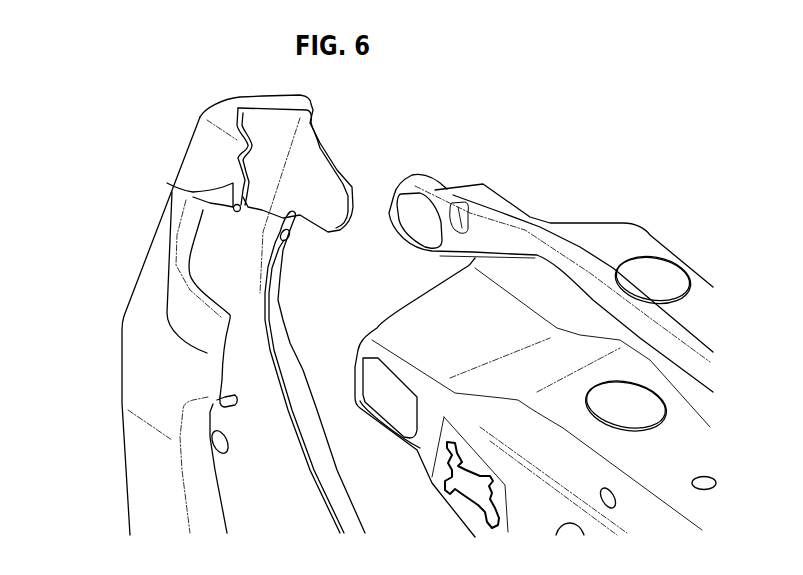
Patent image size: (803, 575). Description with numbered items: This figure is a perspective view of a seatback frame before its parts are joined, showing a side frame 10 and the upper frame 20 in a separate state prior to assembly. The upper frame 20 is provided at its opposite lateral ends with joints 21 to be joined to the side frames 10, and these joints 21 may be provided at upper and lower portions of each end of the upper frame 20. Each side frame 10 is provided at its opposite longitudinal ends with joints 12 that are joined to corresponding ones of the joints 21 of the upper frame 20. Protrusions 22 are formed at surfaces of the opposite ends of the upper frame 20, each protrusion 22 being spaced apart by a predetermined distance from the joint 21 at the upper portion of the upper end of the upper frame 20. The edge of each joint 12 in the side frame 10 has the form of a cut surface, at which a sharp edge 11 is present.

The side frame 10 is at (110, 356).
The sharp edge 11 is at (294, 226).
The joint 12 is at (232, 187).
The upper frame 20 is at (645, 220).
The joint 21 is at (412, 223).
The protrusion 22 is at (453, 203).